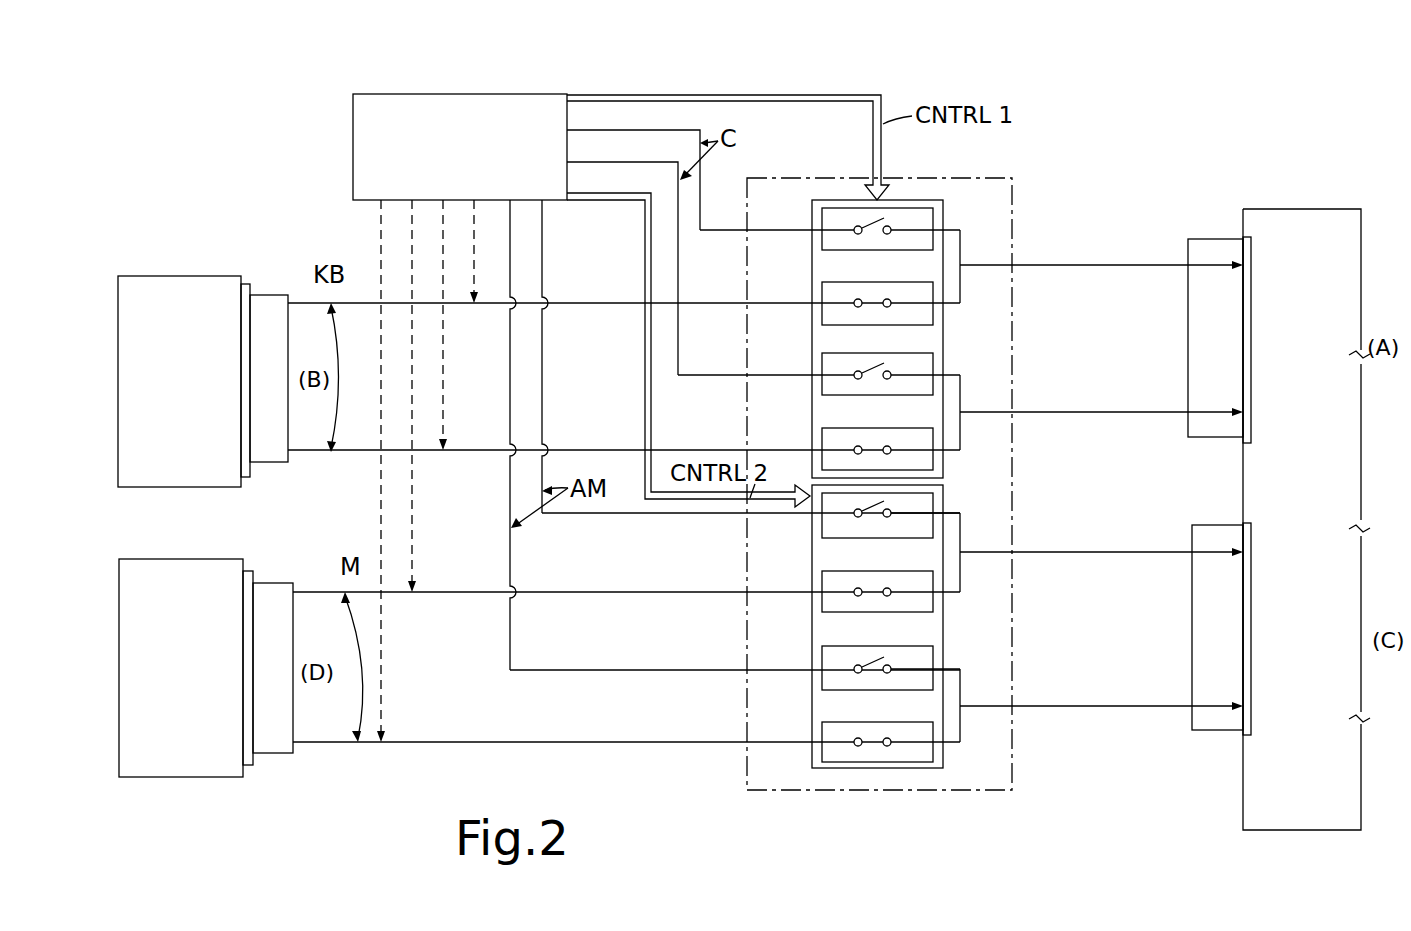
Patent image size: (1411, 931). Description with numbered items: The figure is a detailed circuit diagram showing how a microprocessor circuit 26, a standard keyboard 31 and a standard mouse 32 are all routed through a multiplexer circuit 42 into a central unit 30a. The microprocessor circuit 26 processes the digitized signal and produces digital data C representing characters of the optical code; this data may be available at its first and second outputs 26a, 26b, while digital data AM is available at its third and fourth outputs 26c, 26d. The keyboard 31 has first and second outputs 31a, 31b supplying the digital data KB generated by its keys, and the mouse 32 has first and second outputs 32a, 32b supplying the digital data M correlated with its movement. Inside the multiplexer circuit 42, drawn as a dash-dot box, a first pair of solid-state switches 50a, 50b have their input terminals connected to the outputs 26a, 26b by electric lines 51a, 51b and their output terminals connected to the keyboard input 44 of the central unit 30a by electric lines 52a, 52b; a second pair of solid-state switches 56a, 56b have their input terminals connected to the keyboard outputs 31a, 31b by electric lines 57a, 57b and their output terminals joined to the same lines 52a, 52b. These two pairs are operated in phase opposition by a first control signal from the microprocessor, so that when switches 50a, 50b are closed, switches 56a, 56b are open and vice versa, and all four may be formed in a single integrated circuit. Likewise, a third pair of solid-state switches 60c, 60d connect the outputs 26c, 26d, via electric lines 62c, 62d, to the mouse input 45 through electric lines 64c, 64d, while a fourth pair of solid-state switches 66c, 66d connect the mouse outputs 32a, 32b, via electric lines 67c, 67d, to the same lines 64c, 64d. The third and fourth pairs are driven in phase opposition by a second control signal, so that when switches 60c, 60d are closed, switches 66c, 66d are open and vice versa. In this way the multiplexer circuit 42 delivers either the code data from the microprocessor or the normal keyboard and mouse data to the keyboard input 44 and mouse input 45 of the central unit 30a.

The microprocessor circuit 26 is at (517, 105).
The first output 26a is at (570, 130).
The second output 26b is at (568, 165).
The third output 26c is at (542, 204).
The fourth output 26d is at (509, 204).
The central unit 30a is at (1305, 212).
The keyboard 31 is at (183, 277).
The first output 31a is at (302, 295).
The second output 31b is at (300, 452).
The pointing device (mouse) 32 is at (206, 578).
The first output 32a is at (294, 590).
The second output 32b is at (294, 744).
The multiplexer circuit 42 is at (1018, 242).
The keyboard input 44 is at (1247, 240).
The mouse input 45 is at (1247, 523).
The solid-state switch 50a is at (920, 225).
The solid-state switch 50b is at (918, 368).
The electric line 51a is at (777, 230).
The electric line 51b is at (772, 373).
The electric line 52a is at (1130, 264).
The electric line 52b is at (1128, 411).
The solid-state switch 56a is at (915, 312).
The solid-state switch 56b is at (918, 458).
The electric line 57a is at (610, 305).
The electric line 57b is at (603, 448).
The solid-state switch 60c is at (920, 506).
The solid-state switch 60d is at (920, 658).
The electric line 62c is at (637, 515).
The electric line 62d is at (567, 669).
The electric line 64c is at (1106, 551).
The electric line 64d is at (1104, 705).
The solid-state switch 66c is at (920, 600).
The solid-state switch 66d is at (920, 752).
The electric line 67c is at (705, 594).
The electric line 67d is at (695, 741).